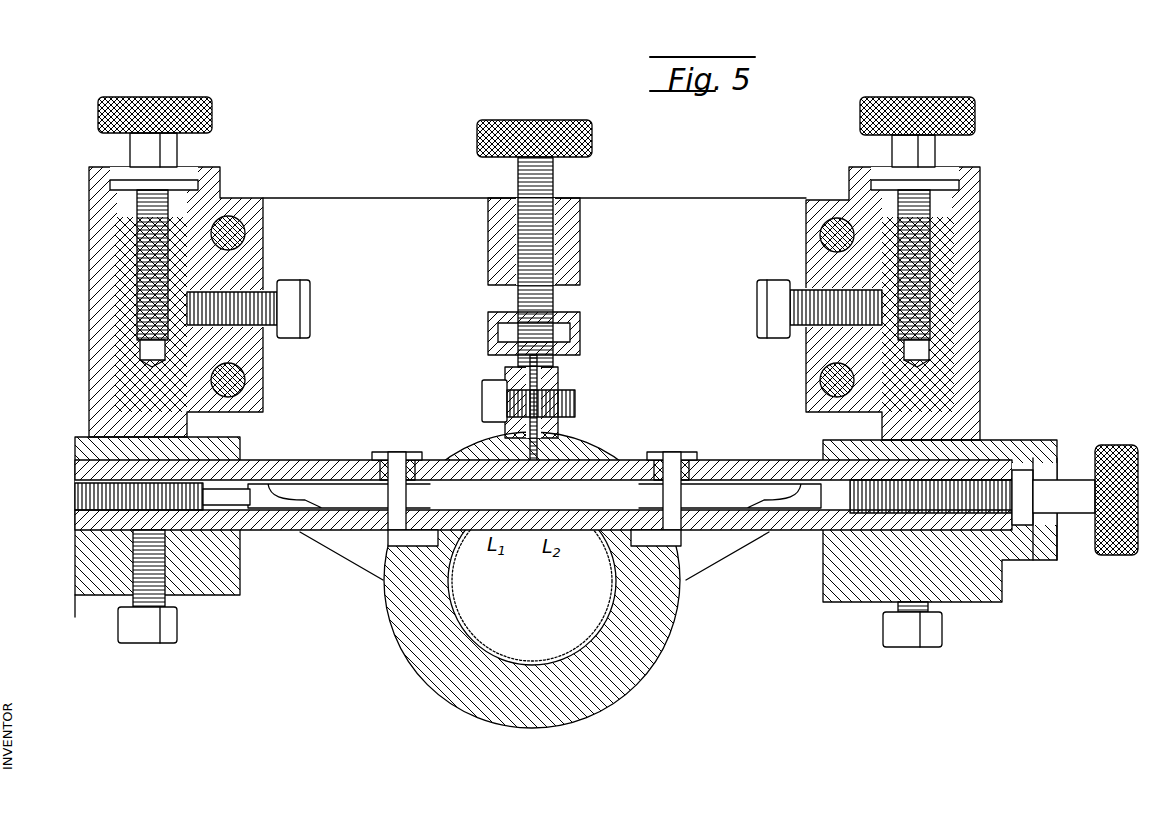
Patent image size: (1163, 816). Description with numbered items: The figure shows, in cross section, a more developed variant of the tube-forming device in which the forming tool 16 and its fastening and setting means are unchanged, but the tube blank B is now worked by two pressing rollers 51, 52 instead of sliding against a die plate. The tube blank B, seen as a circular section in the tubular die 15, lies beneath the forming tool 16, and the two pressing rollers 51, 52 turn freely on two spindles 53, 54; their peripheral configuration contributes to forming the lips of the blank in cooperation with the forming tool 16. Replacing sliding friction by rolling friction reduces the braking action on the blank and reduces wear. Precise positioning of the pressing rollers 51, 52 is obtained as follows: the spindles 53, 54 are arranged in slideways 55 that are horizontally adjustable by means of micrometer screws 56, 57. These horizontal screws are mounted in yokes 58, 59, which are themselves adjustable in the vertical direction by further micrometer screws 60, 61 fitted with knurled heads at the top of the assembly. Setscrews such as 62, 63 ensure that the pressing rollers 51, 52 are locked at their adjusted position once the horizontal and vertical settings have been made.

The tubular die 15 is at (430, 638).
The forming tool 16 is at (542, 450).
The pressing roller 51 is at (309, 484).
The pressing roller 52 is at (753, 482).
The spindle 53 is at (396, 478).
The spindle 54 is at (689, 466).
The slideway 55 is at (287, 519).
The micrometer screw 56 is at (75, 493).
The micrometer screw 57 is at (1066, 492).
The yoke 58 is at (100, 556).
The yoke 59 is at (852, 570).
The micrometer screw 60 is at (142, 143).
The micrometer screw 61 is at (907, 157).
The setscrew 62 is at (140, 631).
The setscrew 63 is at (300, 307).
The tube blank B is at (450, 598).